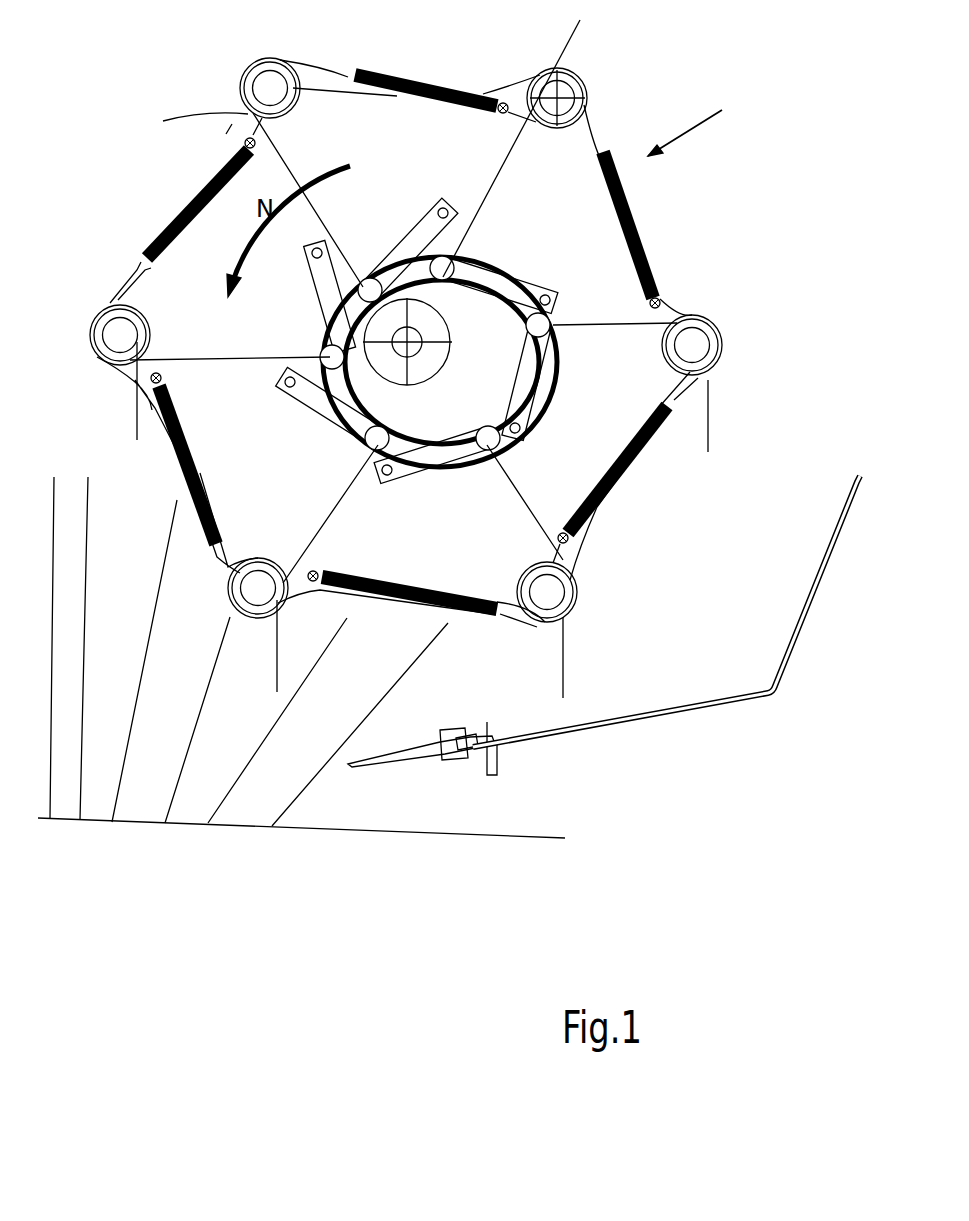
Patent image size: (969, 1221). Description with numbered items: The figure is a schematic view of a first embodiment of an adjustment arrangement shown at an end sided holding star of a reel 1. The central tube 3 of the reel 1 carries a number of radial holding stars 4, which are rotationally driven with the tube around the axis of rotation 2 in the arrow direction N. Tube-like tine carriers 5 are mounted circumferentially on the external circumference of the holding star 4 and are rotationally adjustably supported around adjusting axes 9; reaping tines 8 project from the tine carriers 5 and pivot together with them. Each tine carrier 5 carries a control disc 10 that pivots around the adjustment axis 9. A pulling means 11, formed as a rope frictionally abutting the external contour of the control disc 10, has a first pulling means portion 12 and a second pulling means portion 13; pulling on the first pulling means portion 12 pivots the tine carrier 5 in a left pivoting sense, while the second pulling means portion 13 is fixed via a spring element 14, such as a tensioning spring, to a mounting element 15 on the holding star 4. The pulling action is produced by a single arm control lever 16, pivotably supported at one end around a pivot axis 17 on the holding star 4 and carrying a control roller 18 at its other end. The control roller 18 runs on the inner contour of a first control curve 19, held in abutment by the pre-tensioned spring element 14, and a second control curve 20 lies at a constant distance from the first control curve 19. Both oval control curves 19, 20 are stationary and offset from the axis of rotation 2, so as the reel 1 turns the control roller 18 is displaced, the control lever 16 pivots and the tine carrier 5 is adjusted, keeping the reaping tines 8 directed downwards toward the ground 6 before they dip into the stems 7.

The reel 1 is at (692, 123).
The axis of rotation 2 is at (408, 338).
The central tube 3 is at (425, 367).
The radial holding star 4 is at (296, 226).
The tine carrier 5 is at (406, 314).
The ground 6 is at (343, 828).
The stems 7 is at (212, 670).
The reaping tine 8 is at (568, 642).
The adjusting axis 9 is at (548, 117).
The control disc 10 is at (564, 120).
The pulling means 11 is at (217, 403).
The first pulling means portion 12 is at (490, 170).
The second pulling means portion 13 is at (597, 123).
The spring element 14 is at (185, 203).
The mounting element 15 is at (660, 290).
The control lever 16 is at (542, 380).
The pivot axis 17 is at (547, 297).
The control roller 18 is at (443, 268).
The first control curve 19 is at (333, 420).
The second control curve 20 is at (360, 410).